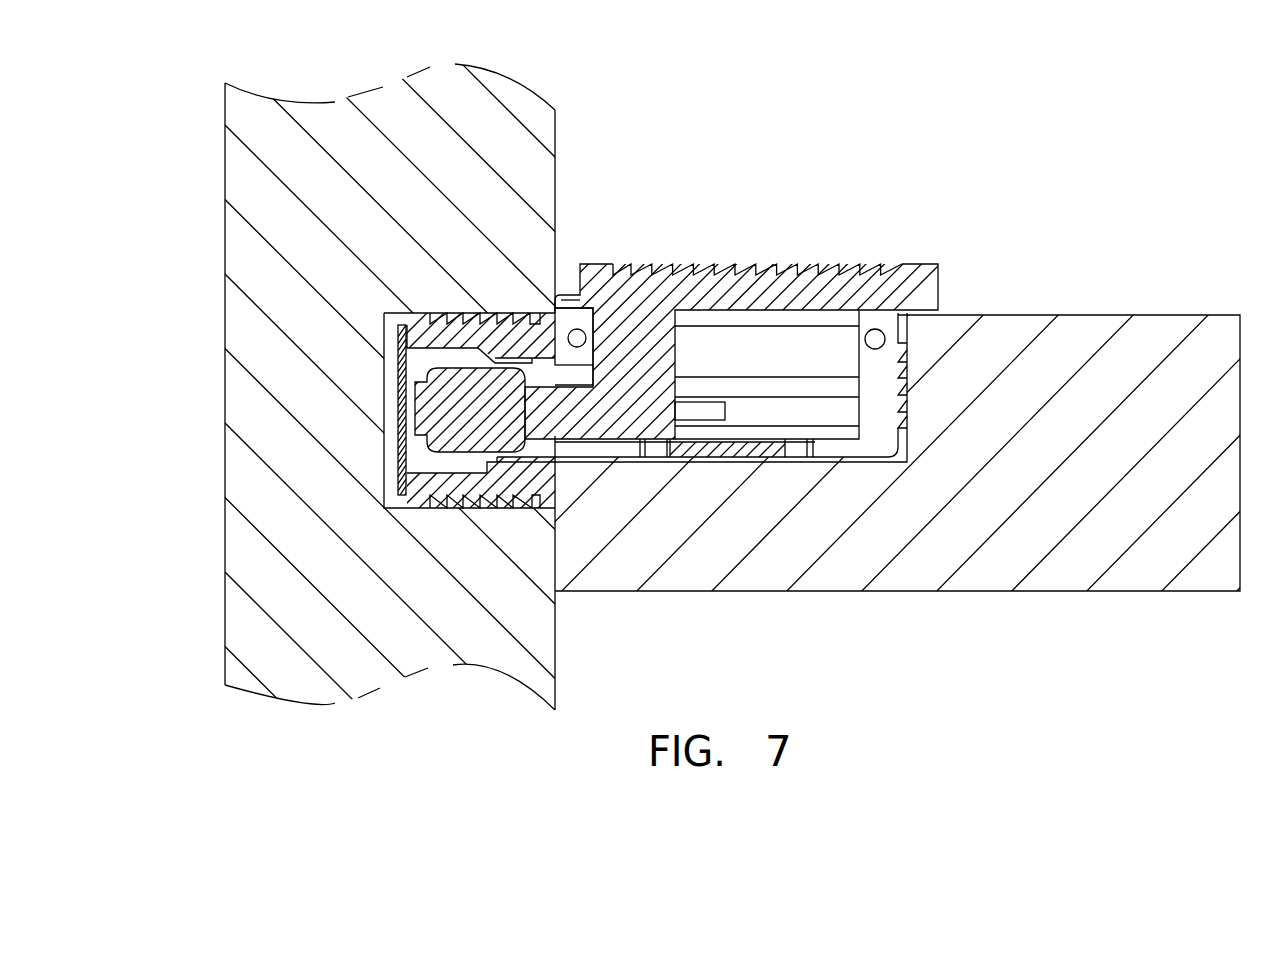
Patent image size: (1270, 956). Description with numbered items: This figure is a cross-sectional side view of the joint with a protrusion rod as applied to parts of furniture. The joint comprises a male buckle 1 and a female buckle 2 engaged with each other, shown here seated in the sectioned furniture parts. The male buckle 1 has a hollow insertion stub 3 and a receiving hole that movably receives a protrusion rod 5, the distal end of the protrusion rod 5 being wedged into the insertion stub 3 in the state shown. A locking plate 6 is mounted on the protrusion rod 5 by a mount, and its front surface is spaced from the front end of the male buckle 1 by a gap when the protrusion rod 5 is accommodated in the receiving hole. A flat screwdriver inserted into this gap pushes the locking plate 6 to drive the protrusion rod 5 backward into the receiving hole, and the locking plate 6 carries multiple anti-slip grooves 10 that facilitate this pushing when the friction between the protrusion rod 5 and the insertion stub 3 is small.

The male buckle 1 is at (883, 433).
The female buckle 2 is at (430, 487).
The insertion stub 3 is at (473, 458).
The protrusion rod 5 is at (568, 413).
The locking plate 6 is at (723, 235).
The anti-slip grooves 10 is at (860, 268).